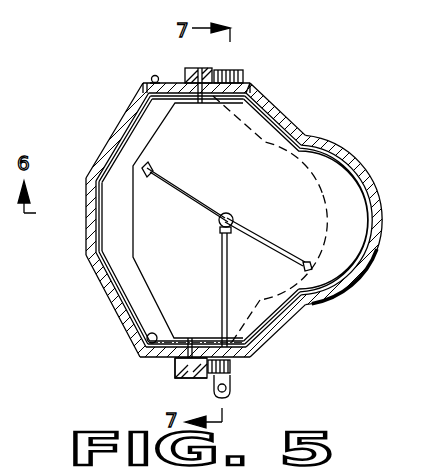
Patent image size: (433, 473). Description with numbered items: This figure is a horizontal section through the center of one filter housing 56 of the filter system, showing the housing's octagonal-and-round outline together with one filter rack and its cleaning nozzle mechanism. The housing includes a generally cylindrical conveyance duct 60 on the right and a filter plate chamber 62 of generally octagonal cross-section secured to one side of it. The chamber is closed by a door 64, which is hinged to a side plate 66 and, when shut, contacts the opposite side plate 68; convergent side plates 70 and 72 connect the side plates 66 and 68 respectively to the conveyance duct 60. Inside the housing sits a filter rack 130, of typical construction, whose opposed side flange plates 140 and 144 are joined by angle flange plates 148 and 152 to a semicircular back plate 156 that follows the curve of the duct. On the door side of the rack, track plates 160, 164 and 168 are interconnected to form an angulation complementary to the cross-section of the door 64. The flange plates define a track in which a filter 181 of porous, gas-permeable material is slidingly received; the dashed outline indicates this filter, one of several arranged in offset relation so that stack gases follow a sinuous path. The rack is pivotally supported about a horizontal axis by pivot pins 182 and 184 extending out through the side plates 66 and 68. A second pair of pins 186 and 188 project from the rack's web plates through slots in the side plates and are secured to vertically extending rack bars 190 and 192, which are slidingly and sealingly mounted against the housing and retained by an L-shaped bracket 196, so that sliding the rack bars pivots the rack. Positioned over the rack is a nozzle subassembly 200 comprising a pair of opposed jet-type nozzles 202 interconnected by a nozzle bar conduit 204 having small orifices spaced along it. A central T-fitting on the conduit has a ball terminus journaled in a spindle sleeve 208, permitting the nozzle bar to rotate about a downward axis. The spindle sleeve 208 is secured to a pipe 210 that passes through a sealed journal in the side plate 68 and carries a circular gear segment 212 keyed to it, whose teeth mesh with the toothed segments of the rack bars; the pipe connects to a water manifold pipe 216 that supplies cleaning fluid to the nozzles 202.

The filter housing 56 is at (392, 263).
The conveyance duct 60 is at (367, 185).
The filter plate chamber 62 is at (108, 124).
The door 64 is at (89, 229).
The side plate 66 is at (177, 80).
The side plate 68 is at (142, 334).
The convergent side plate 70 is at (268, 110).
The convergent side plate 72 is at (272, 318).
The filter rack 130 is at (120, 286).
The side flange plate 140 is at (185, 103).
The side flange plate 144 is at (182, 334).
The angle flange plate 148 is at (272, 136).
The angle flange plate 152 is at (260, 312).
The semicircular back plate 156 is at (323, 152).
The track plate 160 is at (140, 97).
The track plate 164 is at (106, 268).
The track plate 168 is at (101, 194).
The filter 181 is at (295, 200).
The pivot pin 182 is at (262, 84).
The pivot pin 184 is at (241, 312).
The pin 186 is at (207, 68).
The pin 188 is at (193, 378).
The rack bar 190 is at (177, 362).
The rack bar 192 is at (214, 70).
The L-shaped bracket 196 is at (177, 375).
The nozzle subassembly 200 is at (268, 221).
The jet-type nozzle 202 is at (149, 170).
The nozzle bar conduit 204 is at (190, 194).
The spindle sleeve 208 is at (219, 219).
The pipe 210 is at (221, 241).
The circular gear segment 212 is at (237, 368).
The water manifold pipe 216 is at (232, 388).